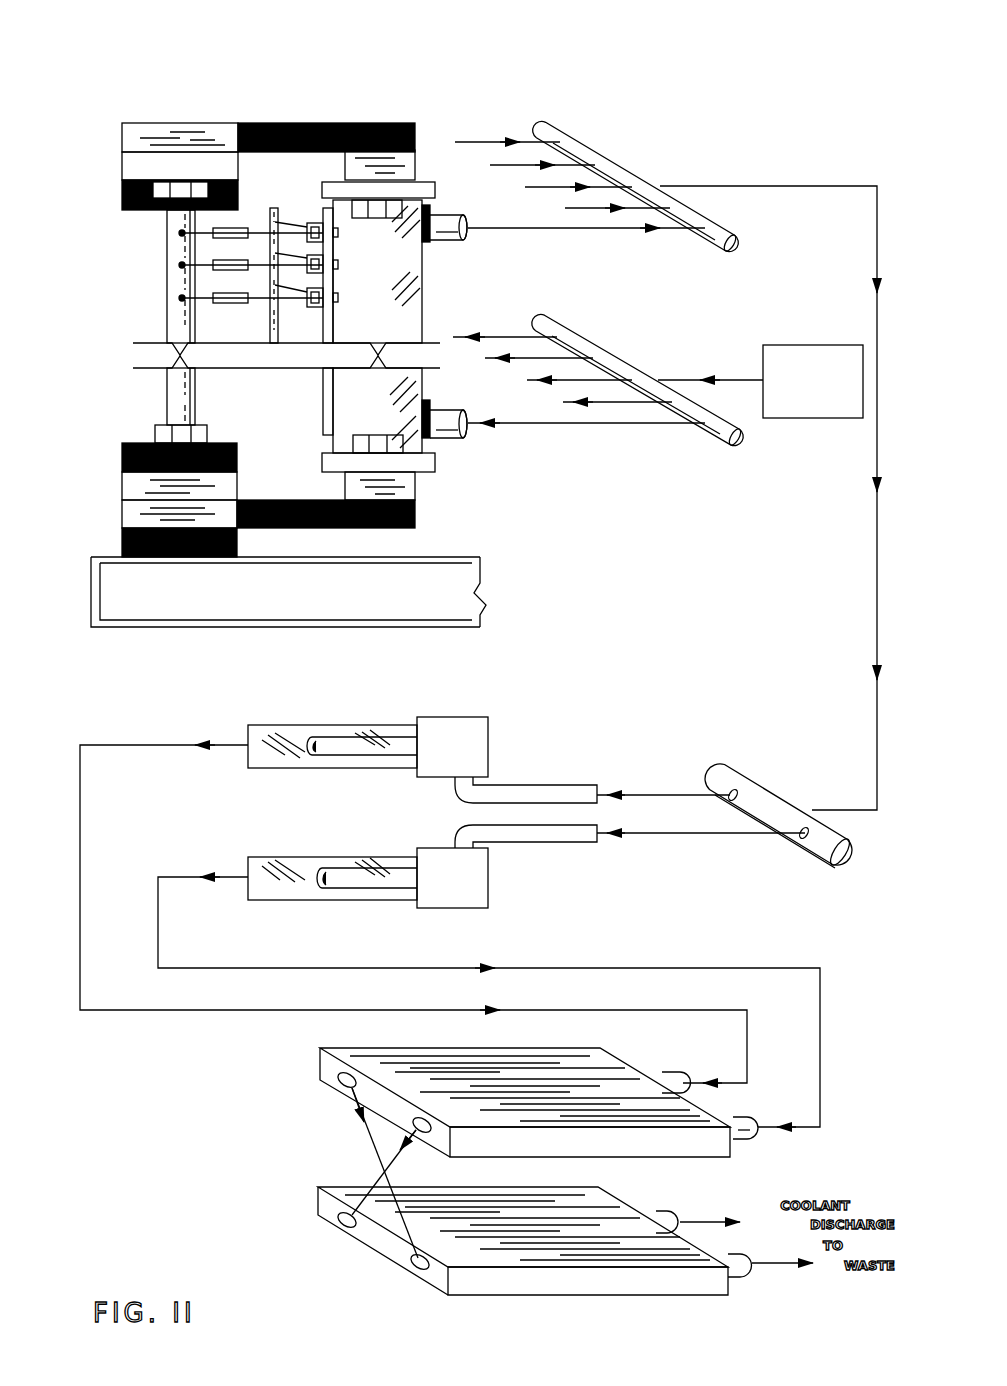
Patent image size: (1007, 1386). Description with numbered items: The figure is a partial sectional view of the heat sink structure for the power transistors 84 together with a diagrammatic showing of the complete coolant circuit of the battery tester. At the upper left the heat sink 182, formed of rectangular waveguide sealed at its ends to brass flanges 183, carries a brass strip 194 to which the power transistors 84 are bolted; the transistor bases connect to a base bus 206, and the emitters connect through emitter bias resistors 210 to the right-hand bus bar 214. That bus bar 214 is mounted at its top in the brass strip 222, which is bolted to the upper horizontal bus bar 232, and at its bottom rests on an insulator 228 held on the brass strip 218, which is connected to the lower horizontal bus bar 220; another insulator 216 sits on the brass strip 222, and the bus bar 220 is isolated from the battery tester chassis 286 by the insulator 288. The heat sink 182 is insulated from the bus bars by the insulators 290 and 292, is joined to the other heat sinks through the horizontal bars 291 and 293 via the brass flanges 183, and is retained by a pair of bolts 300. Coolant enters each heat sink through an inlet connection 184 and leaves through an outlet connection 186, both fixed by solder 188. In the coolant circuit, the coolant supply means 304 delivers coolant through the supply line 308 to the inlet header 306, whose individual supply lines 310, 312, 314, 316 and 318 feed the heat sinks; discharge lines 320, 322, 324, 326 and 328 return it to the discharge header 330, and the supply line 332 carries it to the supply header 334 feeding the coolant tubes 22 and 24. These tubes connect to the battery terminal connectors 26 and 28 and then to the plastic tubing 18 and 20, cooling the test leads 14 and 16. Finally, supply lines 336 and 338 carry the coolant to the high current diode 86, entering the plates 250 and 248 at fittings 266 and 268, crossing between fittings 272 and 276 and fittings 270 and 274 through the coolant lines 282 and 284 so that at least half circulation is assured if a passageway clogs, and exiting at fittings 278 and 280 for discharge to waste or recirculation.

The test lead 14 is at (358, 745).
The test lead 16 is at (336, 880).
The plastic tubing 18 is at (290, 735).
The plastic tubing 20 is at (290, 885).
The coolant tube 22 is at (540, 785).
The coolant tube 24 is at (545, 835).
The battery terminal connector 26 is at (455, 718).
The battery terminal connector 28 is at (468, 905).
The power transistor 84 is at (308, 222).
The high current diode 86 is at (247, 1164).
The heat sink 182 is at (392, 287).
The brass flange 183 is at (437, 190).
The inlet connection 184 is at (470, 432).
The outlet connection 186 is at (470, 238).
The solder connection 188 is at (430, 255).
The brass strip 194 is at (325, 333).
The base bus 206 is at (282, 338).
The emitter bias resistor 210 is at (218, 302).
The right-hand bus bar 214 is at (170, 310).
The insulator 216 is at (118, 206).
The brass strip 218 is at (135, 481).
The lower horizontal bus bar 220 is at (135, 511).
The brass strip 222 is at (128, 166).
The insulator 228 is at (120, 458).
The upper horizontal bus bar 232 is at (158, 135).
The plate 248 is at (535, 1227).
The plate 250 is at (622, 1112).
The tubing fitting 266 is at (670, 1072).
The fitting 268 is at (760, 1136).
The fitting 270 is at (414, 1118).
The fitting 272 is at (328, 1084).
The fitting 274 is at (325, 1217).
The fitting 276 is at (405, 1262).
The fitting 278 is at (663, 1210).
The fitting 280 is at (748, 1277).
The coolant line 282 is at (368, 1146).
The coolant line 284 is at (395, 1168).
The battery tester chassis 286 is at (95, 573).
The insulator 288 is at (120, 545).
The insulator 290 is at (415, 515).
The horizontal bar 291 is at (415, 487).
The insulator 292 is at (342, 130).
The horizontal bar 293 is at (425, 168).
The bolt 300 is at (375, 216).
The coolant supply means 304 is at (790, 418).
The inlet header 306 is at (736, 448).
The supply line 308 is at (690, 380).
The individual supply line 310 is at (543, 418).
The individual supply line 312 is at (621, 398).
The individual supply line 314 is at (583, 376).
The individual supply line 316 is at (548, 354).
The individual supply line 318 is at (513, 333).
The individual discharge line 320 is at (570, 224).
The individual discharge line 322 is at (608, 204).
The individual discharge line 324 is at (568, 182).
The individual discharge line 326 is at (533, 160).
The individual discharge line 328 is at (498, 138).
The discharge header 330 is at (745, 248).
The supply line 332 is at (745, 186).
The supply header 334 is at (832, 860).
The supply line 336 is at (148, 745).
The supply line 338 is at (215, 877).